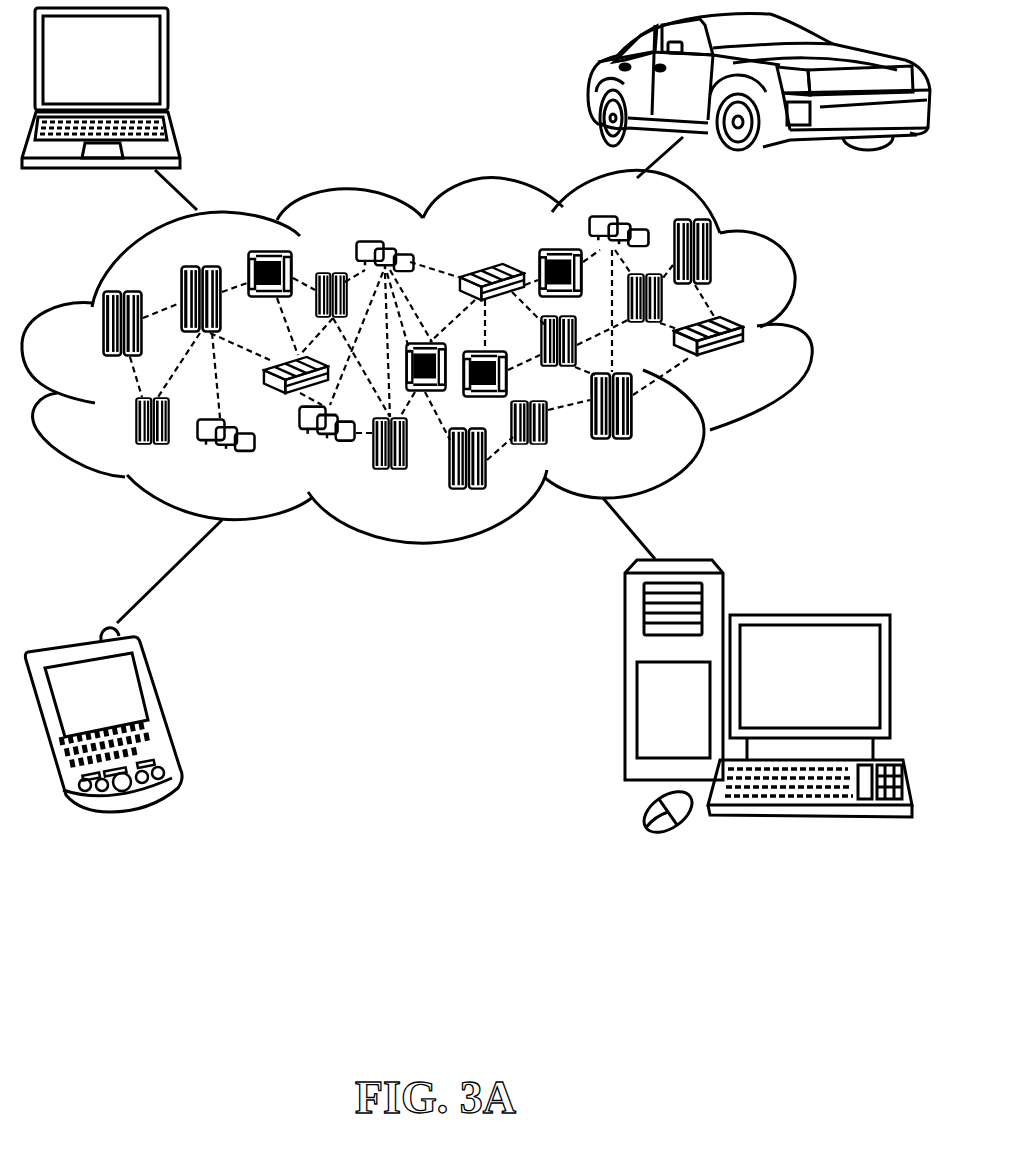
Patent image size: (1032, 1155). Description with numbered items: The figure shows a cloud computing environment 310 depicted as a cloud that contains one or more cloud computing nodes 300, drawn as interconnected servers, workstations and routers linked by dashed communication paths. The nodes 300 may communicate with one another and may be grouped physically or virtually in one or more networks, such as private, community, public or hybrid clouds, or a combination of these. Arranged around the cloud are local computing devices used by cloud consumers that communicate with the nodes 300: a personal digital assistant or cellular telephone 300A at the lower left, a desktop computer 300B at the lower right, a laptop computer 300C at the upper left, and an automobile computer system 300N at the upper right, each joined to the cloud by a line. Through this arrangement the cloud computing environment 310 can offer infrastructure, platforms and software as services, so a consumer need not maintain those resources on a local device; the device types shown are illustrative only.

The cloud computing nodes 300 is at (757, 363).
The cloud computing environment 310 is at (805, 333).
The personal digital assistant (PDA) or cellular telephone 300A is at (158, 707).
The desktop computer 300B is at (806, 614).
The laptop computer 300C is at (168, 70).
The automobile computer system 300N is at (596, 86).